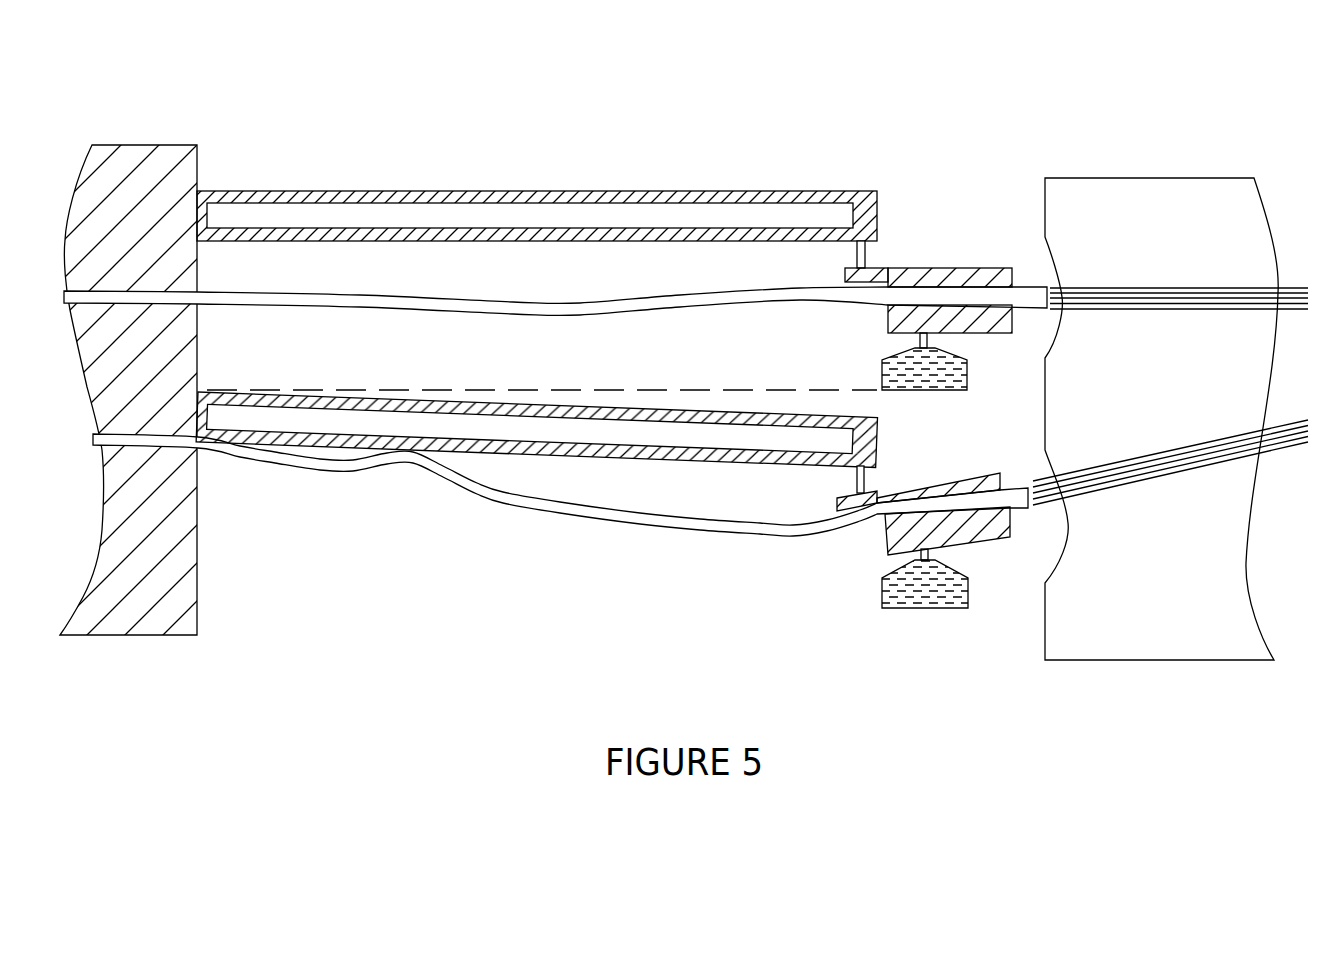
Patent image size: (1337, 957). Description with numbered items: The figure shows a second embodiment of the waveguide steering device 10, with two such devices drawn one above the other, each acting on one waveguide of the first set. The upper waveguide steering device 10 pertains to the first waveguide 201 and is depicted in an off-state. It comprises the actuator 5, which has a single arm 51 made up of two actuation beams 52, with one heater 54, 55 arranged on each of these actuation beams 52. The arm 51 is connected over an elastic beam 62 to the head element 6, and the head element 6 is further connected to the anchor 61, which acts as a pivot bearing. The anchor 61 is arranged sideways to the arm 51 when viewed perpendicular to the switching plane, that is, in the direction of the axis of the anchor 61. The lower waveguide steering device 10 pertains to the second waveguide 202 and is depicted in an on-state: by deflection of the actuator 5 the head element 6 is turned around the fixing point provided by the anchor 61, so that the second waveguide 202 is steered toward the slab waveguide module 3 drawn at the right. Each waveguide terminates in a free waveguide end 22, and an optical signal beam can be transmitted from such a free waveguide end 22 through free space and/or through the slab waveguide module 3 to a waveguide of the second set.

The slab waveguide module 3 is at (1163, 194).
The actuator 5 is at (536, 305).
The head element 6 is at (943, 241).
The waveguide steering device 10 is at (968, 118).
The free waveguide end 22 is at (686, 345).
The arm 51 is at (537, 194).
The actuation beams 52 is at (323, 228).
The heater 54 is at (537, 197).
The heater 55 is at (537, 234).
The anchor 61 is at (868, 373).
The elastic beam 62 is at (858, 262).
The first waveguide 201 is at (497, 284).
The second waveguide 202 is at (388, 478).